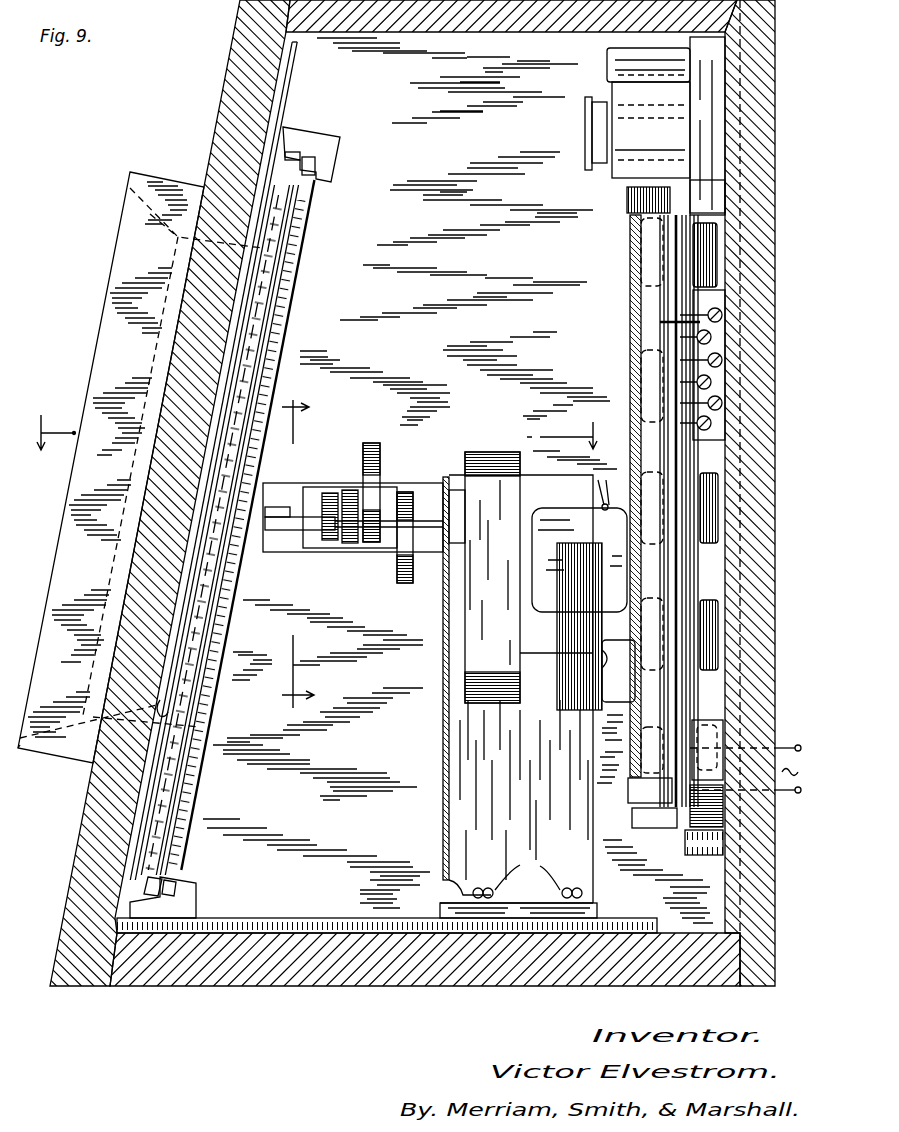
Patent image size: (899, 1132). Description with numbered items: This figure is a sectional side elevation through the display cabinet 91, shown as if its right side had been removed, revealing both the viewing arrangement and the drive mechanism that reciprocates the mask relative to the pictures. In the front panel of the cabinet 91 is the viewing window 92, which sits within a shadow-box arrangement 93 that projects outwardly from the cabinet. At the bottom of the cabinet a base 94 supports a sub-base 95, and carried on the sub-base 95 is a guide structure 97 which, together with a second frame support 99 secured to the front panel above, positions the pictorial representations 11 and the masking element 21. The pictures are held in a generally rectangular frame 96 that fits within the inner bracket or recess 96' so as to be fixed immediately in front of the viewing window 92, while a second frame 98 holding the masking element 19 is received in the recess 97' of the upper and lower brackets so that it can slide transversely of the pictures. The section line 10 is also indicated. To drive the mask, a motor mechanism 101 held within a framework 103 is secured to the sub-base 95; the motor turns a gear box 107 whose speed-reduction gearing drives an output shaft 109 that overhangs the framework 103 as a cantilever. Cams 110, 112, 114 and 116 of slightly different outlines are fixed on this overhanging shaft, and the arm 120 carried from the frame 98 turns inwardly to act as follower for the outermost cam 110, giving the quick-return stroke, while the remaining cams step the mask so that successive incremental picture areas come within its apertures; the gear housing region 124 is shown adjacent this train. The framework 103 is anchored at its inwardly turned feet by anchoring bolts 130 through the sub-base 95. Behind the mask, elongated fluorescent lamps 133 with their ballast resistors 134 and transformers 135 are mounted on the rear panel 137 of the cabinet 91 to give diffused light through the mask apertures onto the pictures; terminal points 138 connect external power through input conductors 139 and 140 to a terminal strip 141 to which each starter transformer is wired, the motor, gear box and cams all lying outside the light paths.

The cabinet structure 91 is at (215, 142).
The viewing window 92 is at (100, 345).
The shadow-box arrangement 93 is at (52, 755).
The base 94 is at (312, 973).
The sub-base 95 is at (303, 918).
The rectangular frame 96 is at (244, 461).
The inner bracket or recess 96' is at (225, 550).
The guide structure 97 is at (185, 897).
The recess 97' is at (273, 552).
The second frame 98 is at (305, 236).
The second frame support 99 is at (341, 155).
The pictorial representations 11 is at (276, 290).
The masking element 19 is at (286, 350).
The masking element 21 is at (208, 704).
The section line 10- 10 is at (301, 551).
The motor mechanism 101 is at (555, 716).
The framework 103 is at (446, 828).
The gear box 107 is at (473, 606).
The output shaft 109 is at (443, 478).
The cam 110 is at (330, 493).
The cam 112 is at (350, 490).
The cam 114 is at (372, 443).
The cam 116 is at (400, 583).
The arm 120 is at (300, 535).
The gear housing 124 is at (276, 484).
The anchoring bolts 130 is at (518, 882).
The lamps 133 is at (630, 328).
The ballast resistors 134 is at (582, 142).
The transformers 135 is at (690, 255).
The rear panel 137 is at (765, 442).
The terminal points 138 is at (796, 802).
The input conductor 139 is at (766, 742).
The input conductor 140 is at (760, 795).
The terminal strip 141 is at (700, 322).